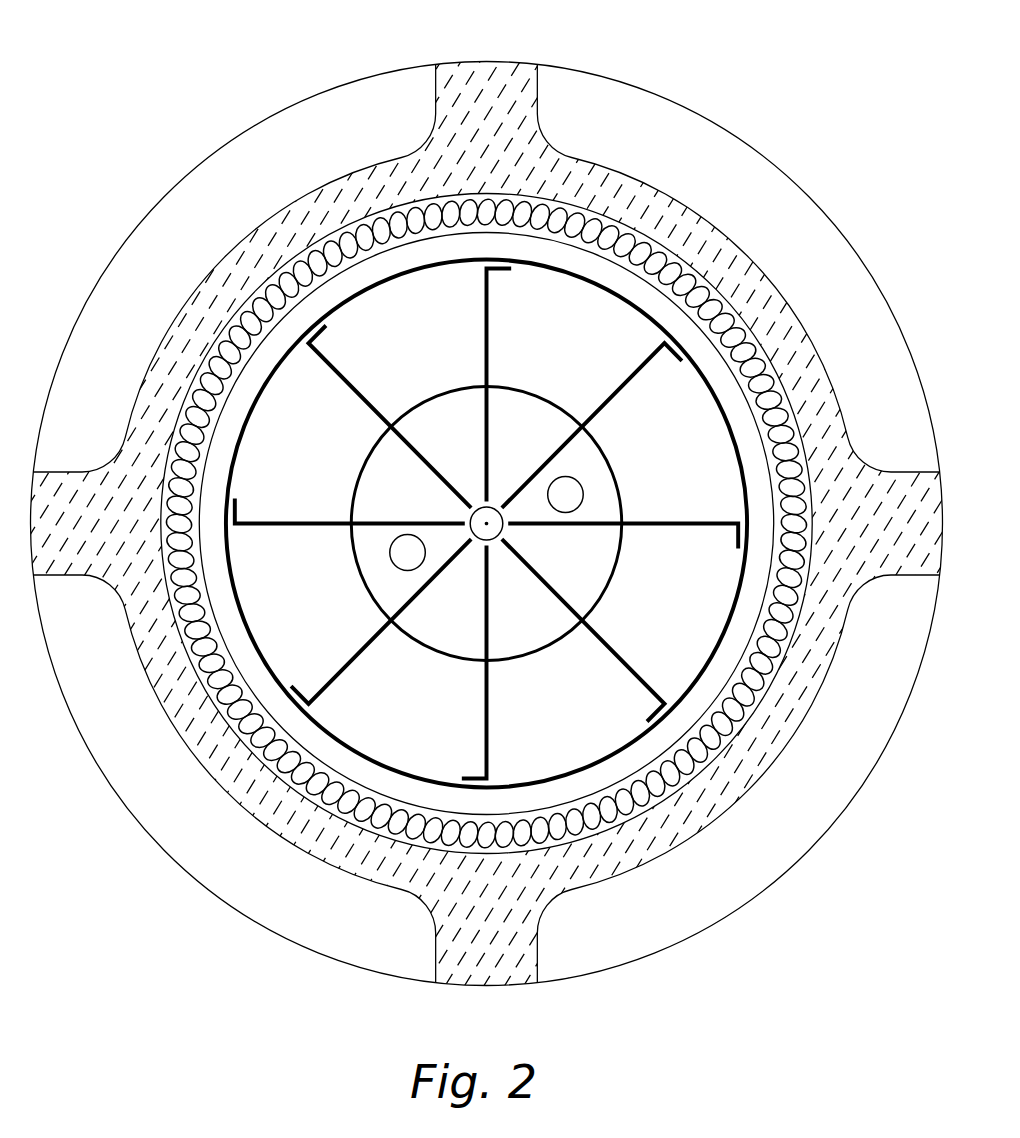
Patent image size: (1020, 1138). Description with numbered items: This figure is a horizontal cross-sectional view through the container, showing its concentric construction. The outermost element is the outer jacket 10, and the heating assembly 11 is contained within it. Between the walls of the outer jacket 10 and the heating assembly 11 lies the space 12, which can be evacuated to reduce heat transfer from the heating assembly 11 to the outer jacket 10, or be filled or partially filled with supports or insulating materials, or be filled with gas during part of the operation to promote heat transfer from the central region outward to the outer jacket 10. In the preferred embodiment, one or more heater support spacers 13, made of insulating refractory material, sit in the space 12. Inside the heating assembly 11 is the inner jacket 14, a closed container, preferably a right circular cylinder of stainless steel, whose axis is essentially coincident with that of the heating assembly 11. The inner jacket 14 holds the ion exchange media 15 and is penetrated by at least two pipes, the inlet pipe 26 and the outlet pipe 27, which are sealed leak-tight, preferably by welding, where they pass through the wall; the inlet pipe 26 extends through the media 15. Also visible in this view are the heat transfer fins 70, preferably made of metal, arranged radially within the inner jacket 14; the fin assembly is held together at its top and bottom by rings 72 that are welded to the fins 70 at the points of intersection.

The outer jacket 10 is at (282, 108).
The heating assembly 11 is at (783, 383).
The space 12 is at (748, 160).
The heater support spacers 13 is at (511, 80).
The inner jacket 14 is at (345, 750).
The media 15 is at (536, 556).
The inlet pipe 26 is at (491, 533).
The outlet pipe 27 is at (575, 486).
The heat transfer fins 70 is at (485, 722).
The rings 72 is at (542, 658).